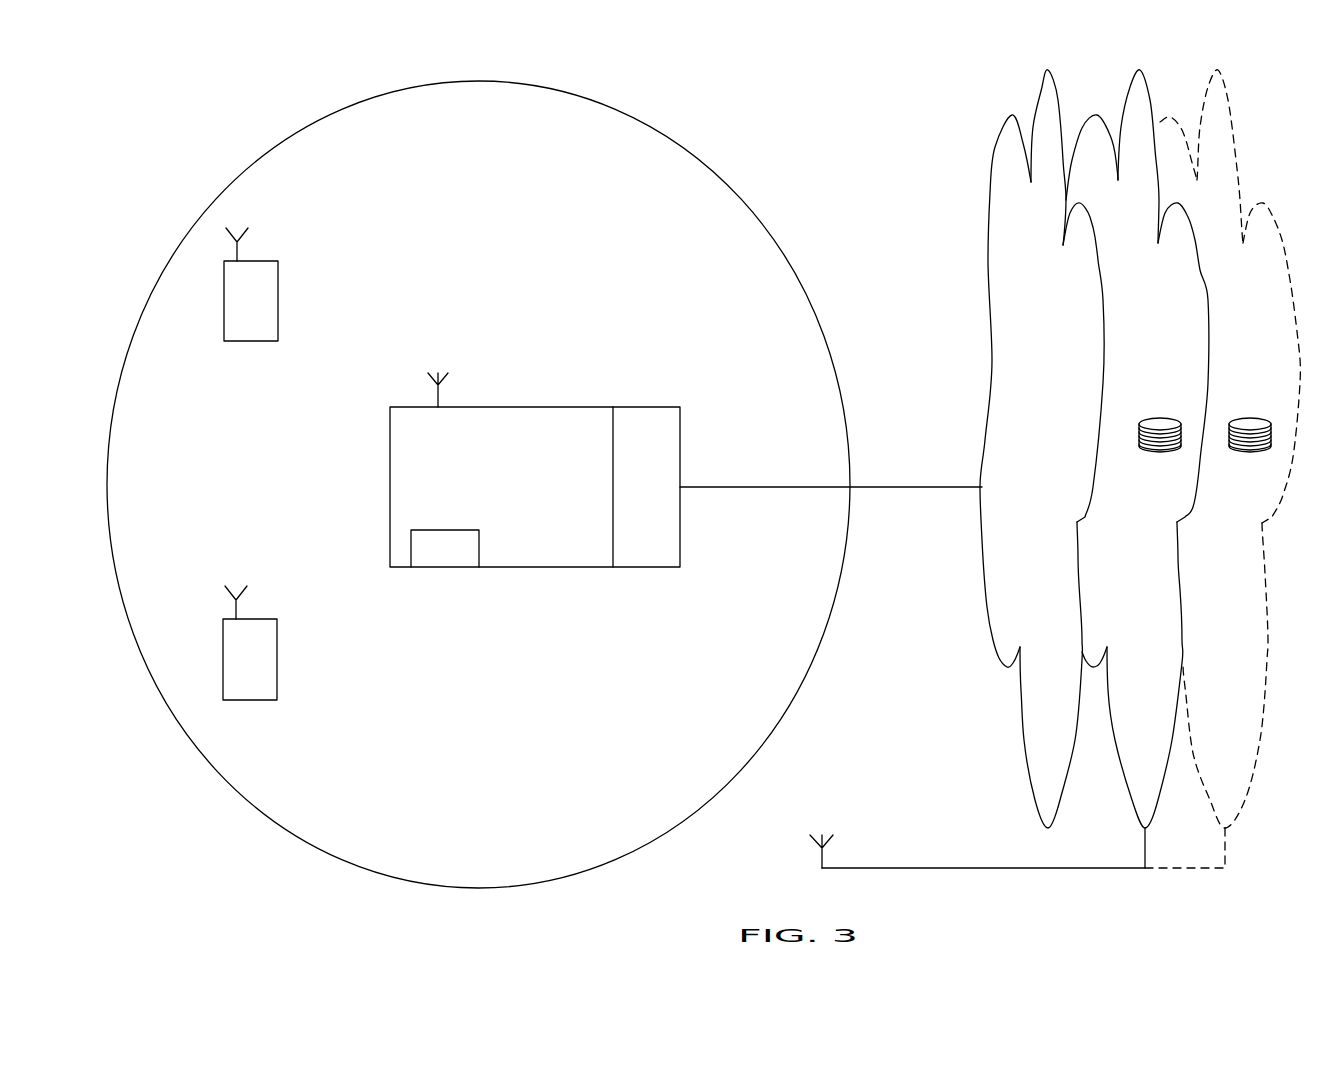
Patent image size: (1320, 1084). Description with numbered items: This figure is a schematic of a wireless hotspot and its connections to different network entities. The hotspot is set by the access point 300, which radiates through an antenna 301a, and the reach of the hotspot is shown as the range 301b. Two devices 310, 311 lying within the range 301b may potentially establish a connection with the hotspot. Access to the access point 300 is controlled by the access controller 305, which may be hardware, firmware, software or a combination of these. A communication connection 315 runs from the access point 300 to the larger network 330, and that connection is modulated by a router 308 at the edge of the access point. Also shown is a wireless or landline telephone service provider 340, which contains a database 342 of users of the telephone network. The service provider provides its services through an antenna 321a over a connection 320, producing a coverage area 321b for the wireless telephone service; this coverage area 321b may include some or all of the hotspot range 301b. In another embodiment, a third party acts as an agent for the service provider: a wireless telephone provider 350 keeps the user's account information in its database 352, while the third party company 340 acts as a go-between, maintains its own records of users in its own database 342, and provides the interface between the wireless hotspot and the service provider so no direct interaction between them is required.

The access point 300 is at (522, 534).
The antenna 301a is at (448, 395).
The range 301b is at (455, 131).
The access controller 305 is at (445, 567).
The router 308 is at (638, 567).
The device 310 is at (277, 302).
The device 311 is at (276, 685).
The communication connection 315 is at (887, 485).
The connection 320 is at (995, 868).
The antenna 321a is at (832, 857).
The coverage area 321b is at (858, 751).
The larger network 330 is at (1032, 311).
The wireless or landline telephone service provider 340 is at (1135, 311).
The database 342 is at (1158, 467).
The wireless telephone provider 350 is at (1227, 311).
The database 352 is at (1257, 468).